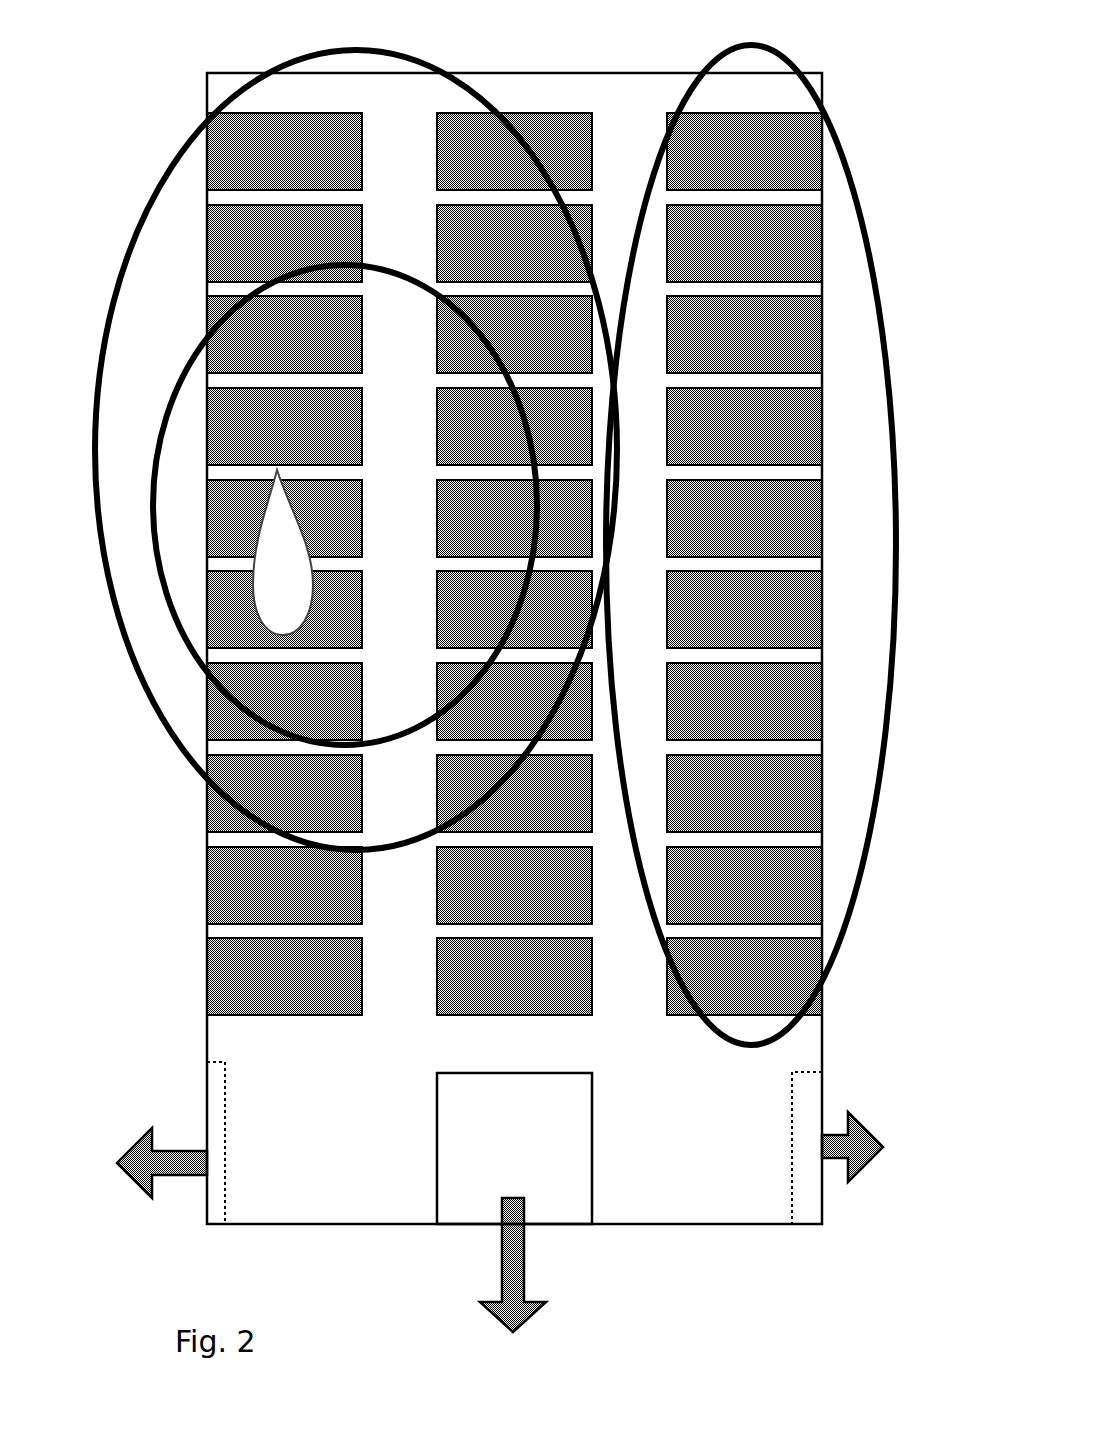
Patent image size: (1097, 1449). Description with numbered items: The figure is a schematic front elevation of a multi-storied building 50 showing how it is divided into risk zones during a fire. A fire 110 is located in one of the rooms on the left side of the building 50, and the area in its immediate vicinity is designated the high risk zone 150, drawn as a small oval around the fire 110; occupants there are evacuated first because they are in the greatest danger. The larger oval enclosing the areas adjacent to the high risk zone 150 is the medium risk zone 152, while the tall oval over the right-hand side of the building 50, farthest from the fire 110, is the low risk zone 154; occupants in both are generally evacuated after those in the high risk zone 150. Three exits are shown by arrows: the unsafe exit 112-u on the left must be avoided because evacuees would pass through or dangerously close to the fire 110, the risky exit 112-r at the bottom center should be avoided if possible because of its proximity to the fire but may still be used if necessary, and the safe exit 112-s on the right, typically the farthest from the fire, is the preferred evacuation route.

The building 50 is at (583, 62).
The medium risk zone 152 is at (208, 112).
The high risk zone 150 is at (208, 322).
The low risk zone 154 is at (750, 43).
The fire 110 is at (262, 594).
The unsafe exit 112-u is at (143, 1128).
The safe exit 112-s is at (860, 1125).
The risky exit 112-r is at (507, 1197).